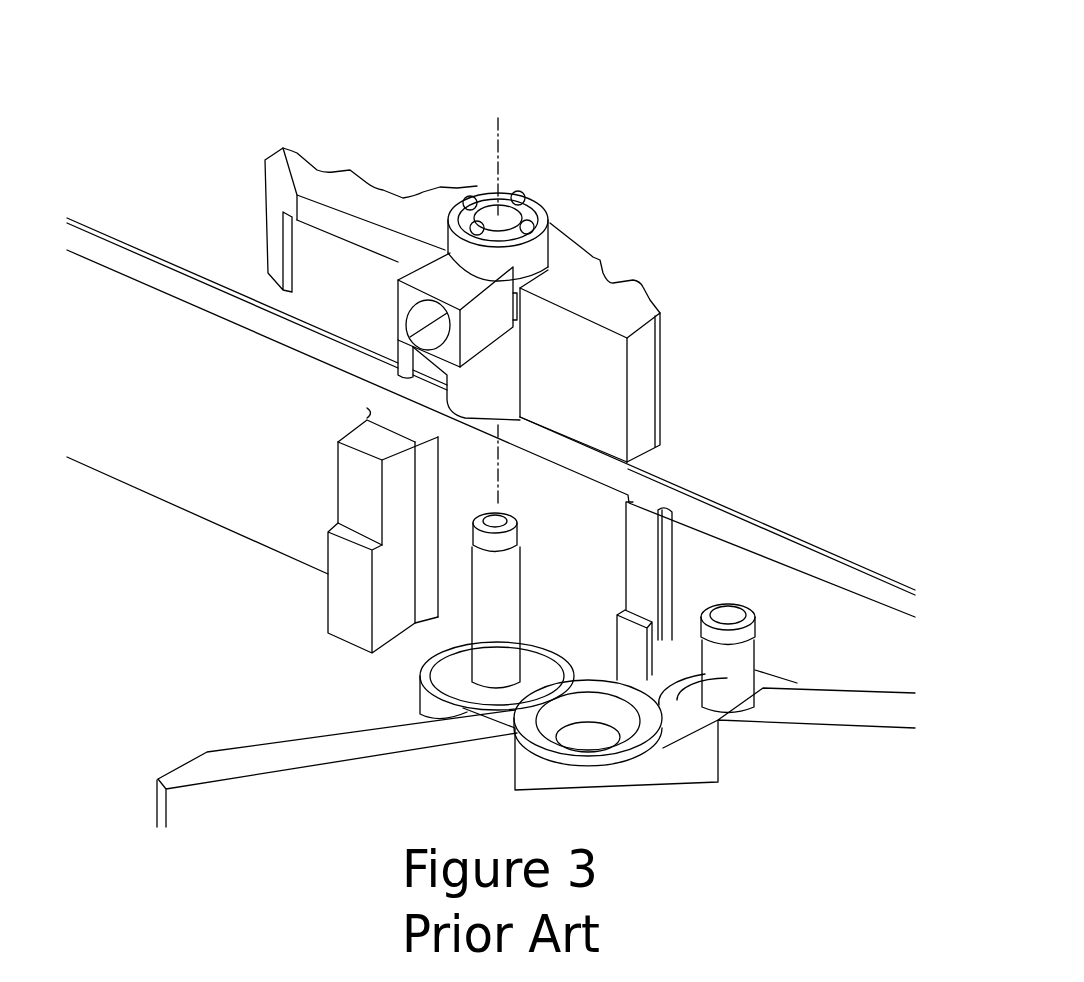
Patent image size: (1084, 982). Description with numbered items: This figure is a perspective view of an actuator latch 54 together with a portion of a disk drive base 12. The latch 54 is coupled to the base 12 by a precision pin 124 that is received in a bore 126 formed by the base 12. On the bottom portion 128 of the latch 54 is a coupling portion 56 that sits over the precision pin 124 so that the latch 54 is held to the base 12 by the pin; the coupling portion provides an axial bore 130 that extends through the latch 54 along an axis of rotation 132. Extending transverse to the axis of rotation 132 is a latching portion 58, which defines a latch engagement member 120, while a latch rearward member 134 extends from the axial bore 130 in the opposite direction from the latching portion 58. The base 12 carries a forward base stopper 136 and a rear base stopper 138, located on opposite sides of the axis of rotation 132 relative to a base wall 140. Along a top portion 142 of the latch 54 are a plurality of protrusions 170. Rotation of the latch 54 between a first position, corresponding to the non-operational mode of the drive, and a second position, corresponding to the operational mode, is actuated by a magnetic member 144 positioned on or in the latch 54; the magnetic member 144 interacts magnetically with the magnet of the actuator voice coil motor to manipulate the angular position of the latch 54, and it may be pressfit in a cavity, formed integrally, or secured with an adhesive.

The base 12 is at (165, 565).
The actuator latch 54 is at (687, 197).
The coupling portion 56 is at (427, 400).
The latching portion 58 is at (262, 147).
The latch engagement member 120 is at (280, 188).
The precision pin 124 is at (500, 603).
The bore 126 is at (460, 673).
The bottom portion 128 is at (517, 430).
The axial bore 130 is at (490, 200).
The axis of rotation 132 is at (503, 147).
The latch rearward member 134 is at (672, 350).
The forward base stopper 136 is at (347, 562).
The rear base stopper 138 is at (632, 640).
The base wall 140 is at (190, 418).
The top portion 142 is at (550, 202).
The magnetic member 144 is at (418, 318).
The protrusions 170 is at (520, 190).